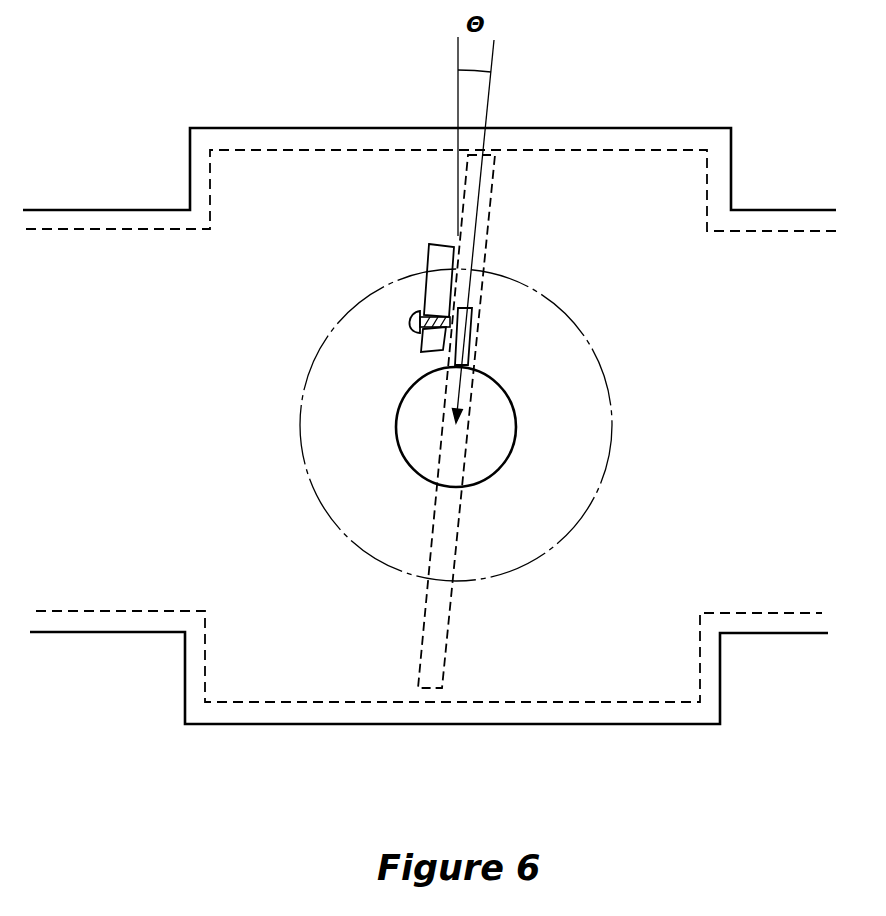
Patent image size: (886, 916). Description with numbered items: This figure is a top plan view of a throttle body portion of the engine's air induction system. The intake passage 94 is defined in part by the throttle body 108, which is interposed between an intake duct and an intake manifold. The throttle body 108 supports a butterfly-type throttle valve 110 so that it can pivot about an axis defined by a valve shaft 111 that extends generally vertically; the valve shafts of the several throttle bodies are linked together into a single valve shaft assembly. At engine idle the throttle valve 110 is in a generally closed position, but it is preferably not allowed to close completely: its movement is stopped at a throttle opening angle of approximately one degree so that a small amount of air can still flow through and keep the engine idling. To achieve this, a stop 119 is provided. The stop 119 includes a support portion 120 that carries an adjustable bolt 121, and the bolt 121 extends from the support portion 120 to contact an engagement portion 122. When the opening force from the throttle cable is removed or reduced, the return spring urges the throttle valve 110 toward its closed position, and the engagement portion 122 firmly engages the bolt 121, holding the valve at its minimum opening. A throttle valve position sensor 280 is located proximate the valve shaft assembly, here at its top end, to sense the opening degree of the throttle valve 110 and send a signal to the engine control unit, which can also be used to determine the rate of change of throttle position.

The intake passage 94 is at (112, 222).
The throttle body 108 is at (653, 140).
The throttle valve 110 is at (448, 622).
The valve shaft 111 is at (518, 437).
The stop 119 is at (413, 231).
The support portion 120 is at (428, 263).
The adjustable bolt 121 is at (407, 322).
The engagement portion 122 is at (478, 333).
The throttle valve position sensor 280 is at (608, 462).